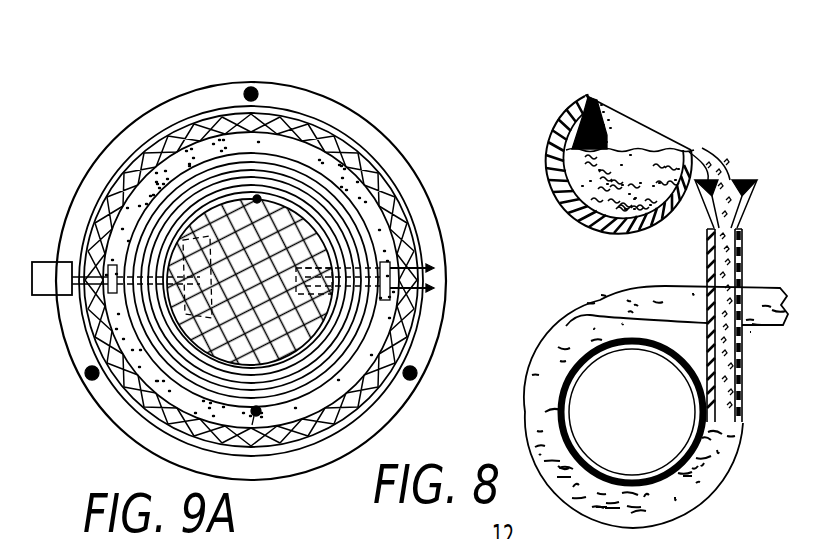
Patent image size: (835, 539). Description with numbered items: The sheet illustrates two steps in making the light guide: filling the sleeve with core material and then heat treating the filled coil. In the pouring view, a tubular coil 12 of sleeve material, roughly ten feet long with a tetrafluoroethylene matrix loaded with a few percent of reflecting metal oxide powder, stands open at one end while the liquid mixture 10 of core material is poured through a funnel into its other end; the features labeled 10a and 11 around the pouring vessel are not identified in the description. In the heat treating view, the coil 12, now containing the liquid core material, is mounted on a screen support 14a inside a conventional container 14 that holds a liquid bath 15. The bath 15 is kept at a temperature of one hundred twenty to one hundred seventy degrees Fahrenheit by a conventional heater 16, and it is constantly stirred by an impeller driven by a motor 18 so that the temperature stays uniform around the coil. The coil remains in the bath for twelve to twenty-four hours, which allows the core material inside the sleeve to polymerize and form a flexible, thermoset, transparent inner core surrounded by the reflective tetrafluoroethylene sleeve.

In FIG. 8, the liquid mixture 10 is at (553, 146).
In FIG. 8, the pouring spout / stream 10a is at (703, 147).
In FIG. 8, the ladle lining 11 is at (568, 218).
In FIG. 9A, the tubular coil 12 is at (300, 108).
In FIG. 8, the tubular coil 12 is at (725, 478).
In FIG. 9A, the container 14 is at (407, 163).
In FIG. 9A, the screen support 14a is at (310, 437).
In FIG. 9A, the liquid bath 15 is at (330, 175).
In FIG. 9A, the heater 16 is at (422, 256).
In FIG. 9A, the motor 18 is at (37, 262).